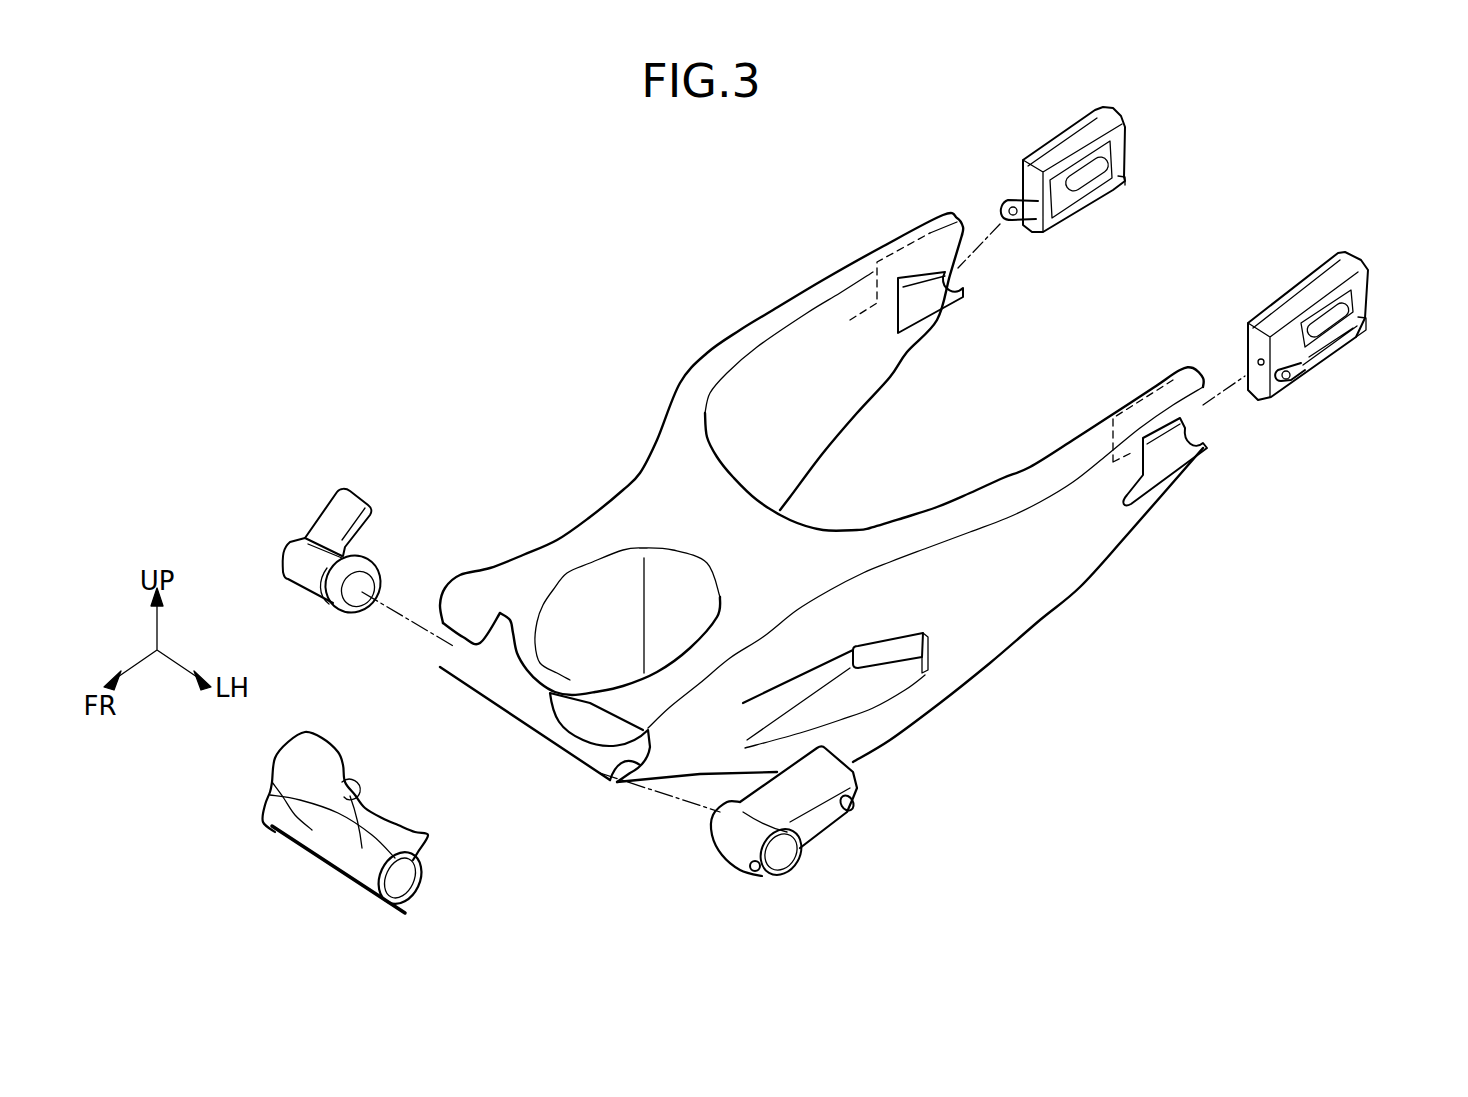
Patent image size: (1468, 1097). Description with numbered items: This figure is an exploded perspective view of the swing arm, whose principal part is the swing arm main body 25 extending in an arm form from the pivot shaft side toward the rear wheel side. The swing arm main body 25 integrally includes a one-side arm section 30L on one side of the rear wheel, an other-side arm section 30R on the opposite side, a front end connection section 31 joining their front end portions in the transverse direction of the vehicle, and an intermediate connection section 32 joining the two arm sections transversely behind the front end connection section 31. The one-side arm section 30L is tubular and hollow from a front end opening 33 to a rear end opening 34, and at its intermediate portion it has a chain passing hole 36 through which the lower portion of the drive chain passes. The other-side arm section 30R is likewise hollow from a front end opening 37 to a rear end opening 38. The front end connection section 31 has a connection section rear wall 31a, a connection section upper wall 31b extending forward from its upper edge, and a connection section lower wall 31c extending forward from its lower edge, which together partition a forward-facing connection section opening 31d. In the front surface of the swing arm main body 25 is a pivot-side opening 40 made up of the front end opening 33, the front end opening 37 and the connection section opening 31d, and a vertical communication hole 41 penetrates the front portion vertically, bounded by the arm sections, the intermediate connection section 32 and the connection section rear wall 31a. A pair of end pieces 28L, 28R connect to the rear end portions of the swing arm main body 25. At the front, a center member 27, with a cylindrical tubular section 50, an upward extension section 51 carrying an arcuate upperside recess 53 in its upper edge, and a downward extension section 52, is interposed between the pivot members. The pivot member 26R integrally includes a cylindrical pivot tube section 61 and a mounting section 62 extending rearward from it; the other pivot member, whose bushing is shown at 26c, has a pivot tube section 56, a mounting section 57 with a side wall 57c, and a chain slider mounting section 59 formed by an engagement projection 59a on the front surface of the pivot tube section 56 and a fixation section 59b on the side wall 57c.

The swing arm main body 25 is at (775, 544).
The pivot member 26R is at (335, 536).
The bushing 26c is at (788, 852).
The center member 27 is at (317, 851).
The end piece 28R is at (1128, 150).
The end piece 28L is at (1368, 292).
The other-side arm section 30R is at (745, 318).
The one-side arm section 30L is at (1084, 584).
The front end connection section 31 is at (563, 672).
The connection section rear wall 31a is at (590, 727).
The connection section upper wall 31b is at (537, 672).
The connection section lower wall 31c is at (530, 697).
The connection section opening 31d is at (533, 703).
The intermediate connection section 32 is at (727, 543).
The front end opening 33 is at (633, 752).
The rear end opening 34 is at (1203, 430).
The chain passing hole 36 is at (903, 652).
The front end opening 37 is at (480, 650).
The rear end opening 38 is at (966, 268).
The pivot-side opening 40 is at (547, 733).
The vertical communication hole 41 is at (635, 607).
The tubular section 50 is at (375, 873).
The upward extension section 51 is at (287, 741).
The downward extension section 52 is at (398, 907).
The upperside recess 53 is at (318, 818).
The pivot tube section 56 is at (730, 838).
The mounting section 57 is at (857, 776).
The side wall 57c is at (810, 830).
The chain slider mounting section 59 is at (863, 863).
The engagement projection 59a is at (755, 877).
The fixation section 59b is at (859, 820).
The pivot tube section 61 is at (302, 585).
The mounting section 62 is at (348, 508).